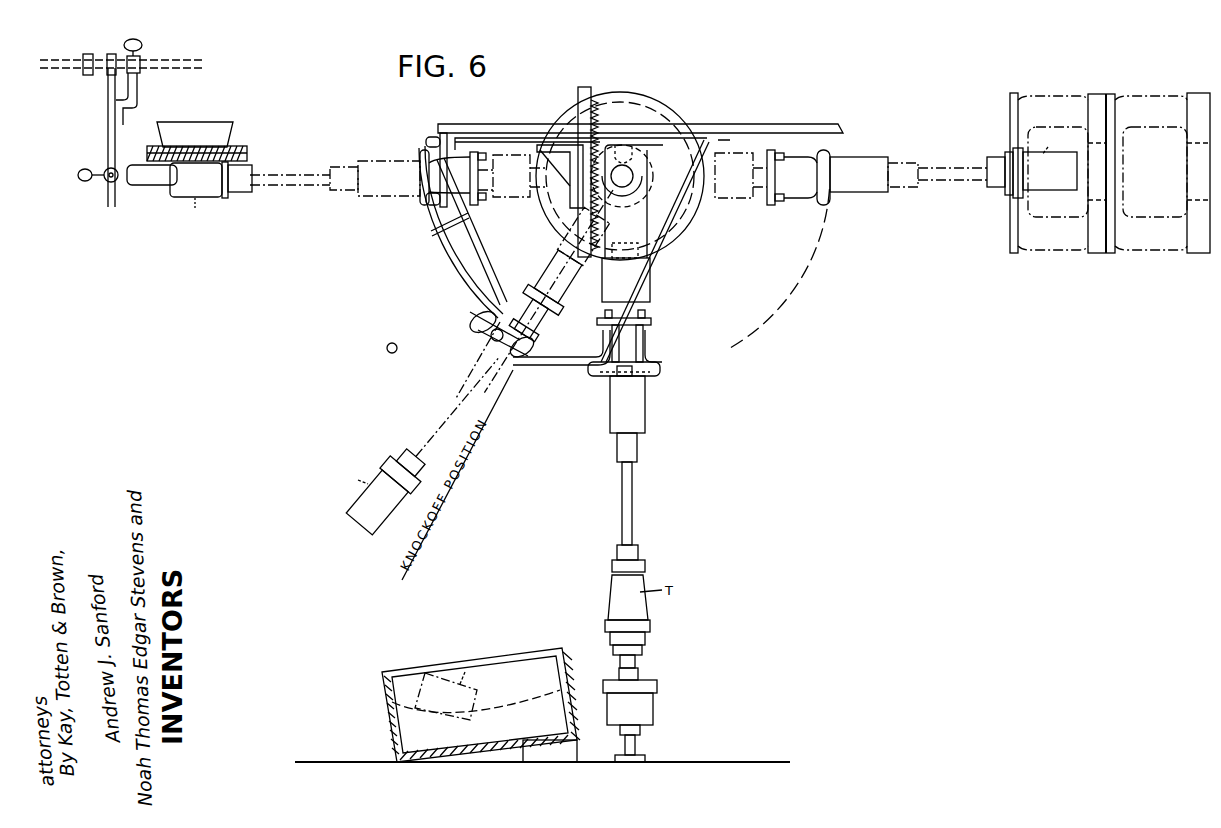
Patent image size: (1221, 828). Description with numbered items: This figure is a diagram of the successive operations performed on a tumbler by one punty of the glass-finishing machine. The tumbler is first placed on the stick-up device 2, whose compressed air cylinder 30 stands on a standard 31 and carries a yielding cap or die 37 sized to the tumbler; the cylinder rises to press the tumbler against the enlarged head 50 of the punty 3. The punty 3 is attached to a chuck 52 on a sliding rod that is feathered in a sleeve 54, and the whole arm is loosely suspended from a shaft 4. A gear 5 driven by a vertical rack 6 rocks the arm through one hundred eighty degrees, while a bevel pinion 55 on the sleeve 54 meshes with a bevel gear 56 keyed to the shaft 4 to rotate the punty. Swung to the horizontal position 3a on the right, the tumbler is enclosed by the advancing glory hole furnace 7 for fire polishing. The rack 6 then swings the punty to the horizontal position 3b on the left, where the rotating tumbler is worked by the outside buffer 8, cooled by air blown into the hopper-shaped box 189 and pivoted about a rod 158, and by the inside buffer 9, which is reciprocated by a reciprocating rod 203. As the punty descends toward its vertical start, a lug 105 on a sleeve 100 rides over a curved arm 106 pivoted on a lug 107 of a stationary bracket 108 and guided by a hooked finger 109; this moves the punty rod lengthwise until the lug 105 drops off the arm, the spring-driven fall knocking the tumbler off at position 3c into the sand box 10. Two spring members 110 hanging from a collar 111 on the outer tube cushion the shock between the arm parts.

The reciprocating rod 203 is at (182, 57).
The inside buffer 9 is at (150, 185).
The hopper-shaped box 189 is at (187, 132).
The rod 158 is at (238, 146).
The outside buffer 8 is at (247, 156).
The horizontal position of punty 3b is at (312, 179).
The vertical rack 6 is at (585, 88).
The shaft 4 is at (626, 178).
The gear 5 is at (643, 183).
The bevel pinion 55 is at (632, 223).
The bevel gear 56 is at (695, 222).
The collar 111 is at (648, 322).
The sleeve 54 is at (633, 336).
The spring members 110 is at (612, 328).
The sleeve 100 is at (642, 405).
The lug 105 is at (511, 300).
The chuck 52 is at (622, 447).
The punty 3 is at (630, 497).
The enlarged head 50 is at (618, 556).
The cap or die 37 is at (645, 636).
The stick-up device 2 is at (642, 667).
The compressed air cylinder 30 is at (646, 703).
The standard 31 is at (633, 741).
The sand box 10 is at (396, 703).
The knocking-off position of punty 3c is at (427, 430).
The stationary bracket 108 is at (500, 244).
The hooked finger 109 is at (434, 231).
The curved arm 106 is at (462, 284).
The lug 107 is at (497, 331).
The horizontal position of punty 3a is at (944, 173).
The glory hole furnace 7 is at (1062, 253).